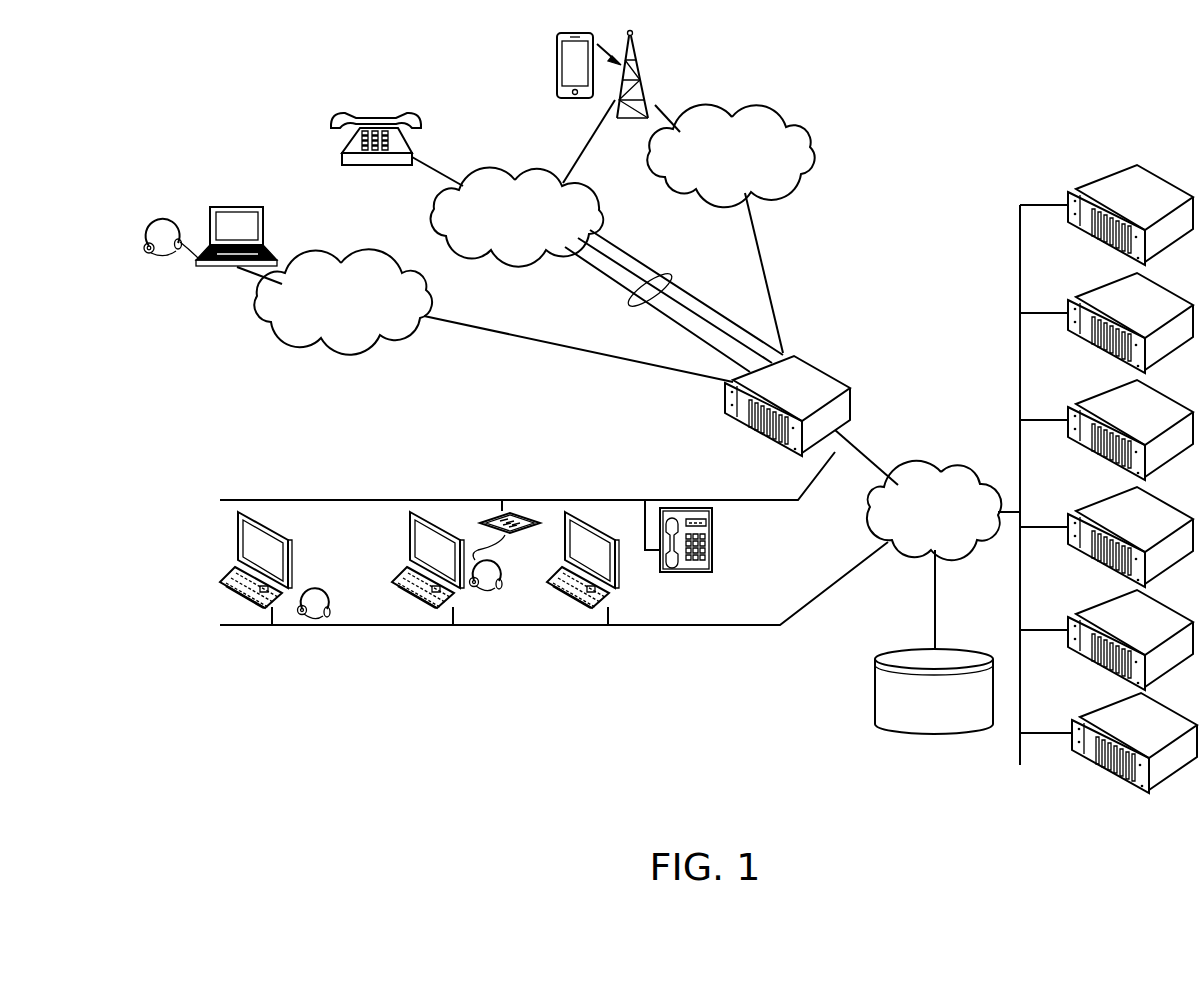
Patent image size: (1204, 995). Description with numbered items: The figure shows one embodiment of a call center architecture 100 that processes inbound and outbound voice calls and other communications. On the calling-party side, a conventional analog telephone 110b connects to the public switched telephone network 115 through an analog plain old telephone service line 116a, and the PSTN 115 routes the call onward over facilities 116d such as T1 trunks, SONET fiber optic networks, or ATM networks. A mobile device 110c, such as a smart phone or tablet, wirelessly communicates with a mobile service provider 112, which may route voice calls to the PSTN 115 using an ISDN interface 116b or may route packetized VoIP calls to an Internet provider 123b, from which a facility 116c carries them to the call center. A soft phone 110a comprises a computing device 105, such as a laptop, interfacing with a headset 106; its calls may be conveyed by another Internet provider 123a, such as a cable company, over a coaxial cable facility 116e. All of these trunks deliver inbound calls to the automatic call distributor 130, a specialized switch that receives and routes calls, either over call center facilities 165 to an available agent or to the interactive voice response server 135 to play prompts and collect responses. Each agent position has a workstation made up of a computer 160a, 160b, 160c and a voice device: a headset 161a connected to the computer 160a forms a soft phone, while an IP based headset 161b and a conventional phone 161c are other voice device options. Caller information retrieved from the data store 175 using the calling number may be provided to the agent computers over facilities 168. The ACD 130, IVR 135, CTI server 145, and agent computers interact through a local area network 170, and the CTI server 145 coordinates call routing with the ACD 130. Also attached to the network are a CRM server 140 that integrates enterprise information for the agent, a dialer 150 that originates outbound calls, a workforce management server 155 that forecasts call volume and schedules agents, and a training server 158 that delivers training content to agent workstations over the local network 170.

The call center architecture 100 is at (946, 108).
The computing device 105 is at (211, 232).
The headset 106 is at (160, 266).
The soft phone 110a is at (240, 192).
The conventional analog telephone 110b is at (410, 152).
The mobile device 110c is at (555, 68).
The mobile service provider 112 is at (650, 86).
The public switched telephone network 115 is at (517, 216).
The analog plain old telephone service line 116a is at (448, 178).
The ISDN interface 116b is at (596, 126).
The facility 116c is at (765, 272).
The facilities 116d is at (640, 300).
The coaxial cable facility 116e is at (578, 340).
The Internet provider 123a is at (343, 302).
The Internet provider 123b is at (730, 155).
The automatic call distributor 130 is at (811, 420).
The interactive voice response server 135 is at (1130, 215).
The CRM server 140 is at (1130, 323).
The CTI server 145 is at (1130, 430).
The dialer 150 is at (1130, 537).
The workforce management server 155 is at (1130, 640).
The training server 158 is at (1134, 743).
The computer 160a is at (292, 556).
The computer 160b is at (466, 552).
The computer 160c is at (612, 558).
The headset 161a is at (327, 597).
The IP based headset 161b is at (500, 570).
The conventional phone 161c is at (702, 575).
The call center facilities 165 is at (742, 500).
The facilities 168 is at (748, 628).
The local area network 170 is at (880, 526).
The data store 175 is at (934, 642).